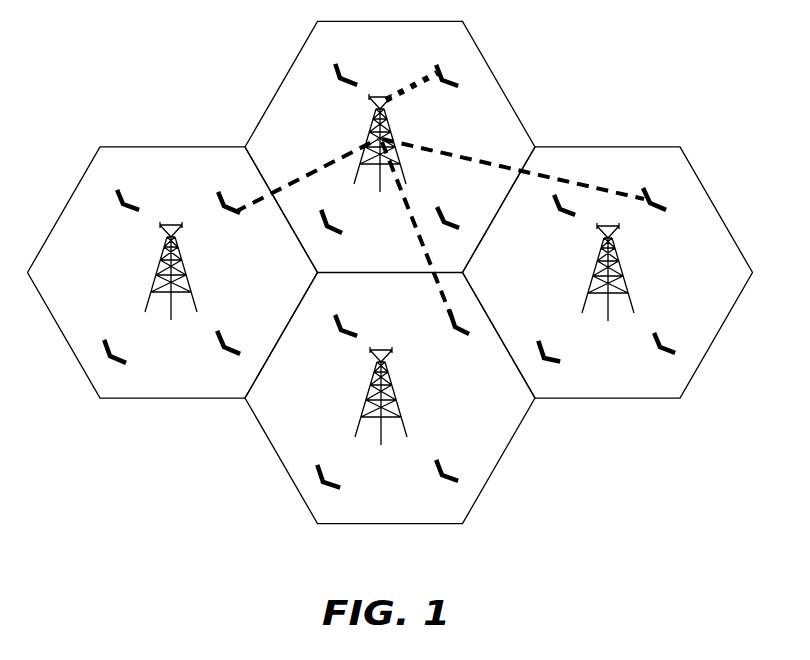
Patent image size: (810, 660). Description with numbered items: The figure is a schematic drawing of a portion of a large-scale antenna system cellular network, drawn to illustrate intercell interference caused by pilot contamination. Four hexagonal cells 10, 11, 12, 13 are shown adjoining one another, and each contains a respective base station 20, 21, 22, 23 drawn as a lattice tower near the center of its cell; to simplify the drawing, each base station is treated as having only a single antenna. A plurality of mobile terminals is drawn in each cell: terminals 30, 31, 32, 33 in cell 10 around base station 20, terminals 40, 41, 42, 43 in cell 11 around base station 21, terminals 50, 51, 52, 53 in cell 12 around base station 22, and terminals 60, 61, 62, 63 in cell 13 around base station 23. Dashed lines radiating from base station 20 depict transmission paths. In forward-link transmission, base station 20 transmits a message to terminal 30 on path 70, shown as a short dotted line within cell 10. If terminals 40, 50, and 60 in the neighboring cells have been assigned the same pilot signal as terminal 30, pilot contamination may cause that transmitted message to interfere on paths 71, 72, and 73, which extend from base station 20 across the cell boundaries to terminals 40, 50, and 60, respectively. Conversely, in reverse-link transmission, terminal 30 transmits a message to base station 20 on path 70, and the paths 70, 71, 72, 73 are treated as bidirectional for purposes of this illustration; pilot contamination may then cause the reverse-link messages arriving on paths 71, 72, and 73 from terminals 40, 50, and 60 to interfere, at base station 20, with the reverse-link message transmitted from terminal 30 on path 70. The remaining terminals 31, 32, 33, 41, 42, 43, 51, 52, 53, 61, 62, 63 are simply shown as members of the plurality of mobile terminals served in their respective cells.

The cell 10 is at (499, 85).
The cell 11 is at (712, 345).
The cell 12 is at (499, 460).
The cell 13 is at (62, 337).
The base station 20 is at (400, 165).
The base station 21 is at (623, 277).
The base station 22 is at (396, 400).
The base station 23 is at (187, 277).
The mobile terminal 30 is at (436, 68).
The mobile terminal 31 is at (447, 212).
The mobile terminal 32 is at (330, 214).
The mobile terminal 33 is at (333, 70).
The mobile terminal 40 is at (665, 210).
The mobile terminal 41 is at (653, 340).
The mobile terminal 42 is at (548, 343).
The mobile terminal 43 is at (553, 200).
The mobile terminal 50 is at (447, 320).
The mobile terminal 51 is at (435, 468).
The mobile terminal 52 is at (328, 470).
The mobile terminal 53 is at (333, 322).
The mobile terminal 60 is at (218, 196).
The mobile terminal 61 is at (216, 338).
The mobile terminal 62 is at (108, 343).
The mobile terminal 63 is at (115, 197).
The path 70 is at (425, 92).
The path 71 is at (577, 185).
The path 72 is at (420, 240).
The path 73 is at (318, 160).